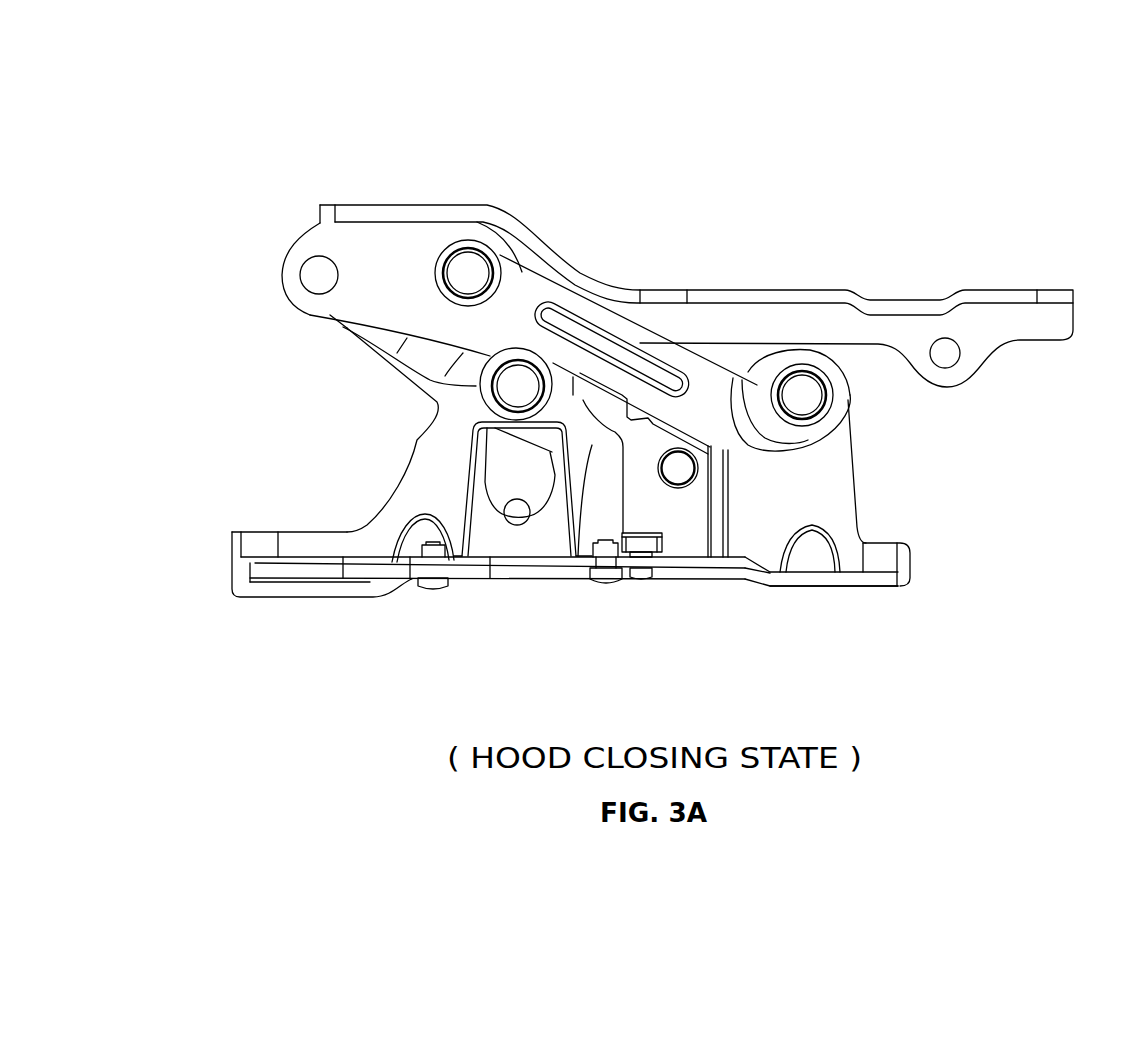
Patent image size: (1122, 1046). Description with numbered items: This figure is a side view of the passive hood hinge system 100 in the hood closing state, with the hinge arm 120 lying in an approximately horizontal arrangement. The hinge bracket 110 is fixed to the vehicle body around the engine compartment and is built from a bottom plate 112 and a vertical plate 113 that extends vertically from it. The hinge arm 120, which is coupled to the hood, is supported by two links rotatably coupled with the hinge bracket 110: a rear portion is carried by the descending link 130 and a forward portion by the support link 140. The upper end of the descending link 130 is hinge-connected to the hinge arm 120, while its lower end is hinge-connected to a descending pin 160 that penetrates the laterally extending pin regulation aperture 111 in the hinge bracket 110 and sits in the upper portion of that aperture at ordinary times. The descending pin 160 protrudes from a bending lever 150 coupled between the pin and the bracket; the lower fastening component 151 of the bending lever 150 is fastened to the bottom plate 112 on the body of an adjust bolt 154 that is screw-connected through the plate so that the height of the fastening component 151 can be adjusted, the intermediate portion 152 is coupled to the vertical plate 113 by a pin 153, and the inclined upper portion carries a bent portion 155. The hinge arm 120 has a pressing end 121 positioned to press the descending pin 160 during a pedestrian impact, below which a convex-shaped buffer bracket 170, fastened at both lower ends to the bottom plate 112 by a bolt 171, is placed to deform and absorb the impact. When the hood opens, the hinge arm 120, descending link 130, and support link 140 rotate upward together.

The passive hood hinge system 100 is at (869, 252).
The hinge bracket 110 is at (860, 477).
The pin regulation aperture 111 is at (533, 524).
The bottom plate 112 is at (850, 590).
The vertical plate 113 is at (830, 450).
The hinge arm 120 is at (995, 298).
The pressing end 121 is at (442, 380).
The descending link 130 is at (362, 342).
The support link 140 is at (650, 342).
The bending lever 150 is at (573, 378).
The fastening component 151 is at (653, 542).
The intermediate portion 152 is at (662, 532).
The pin 153 is at (682, 460).
The adjust bolt 154 is at (640, 580).
The bent portion 155 is at (590, 553).
The descending pin 160 is at (523, 378).
The buffer bracket 170 is at (470, 482).
The bolt 171 is at (432, 591).